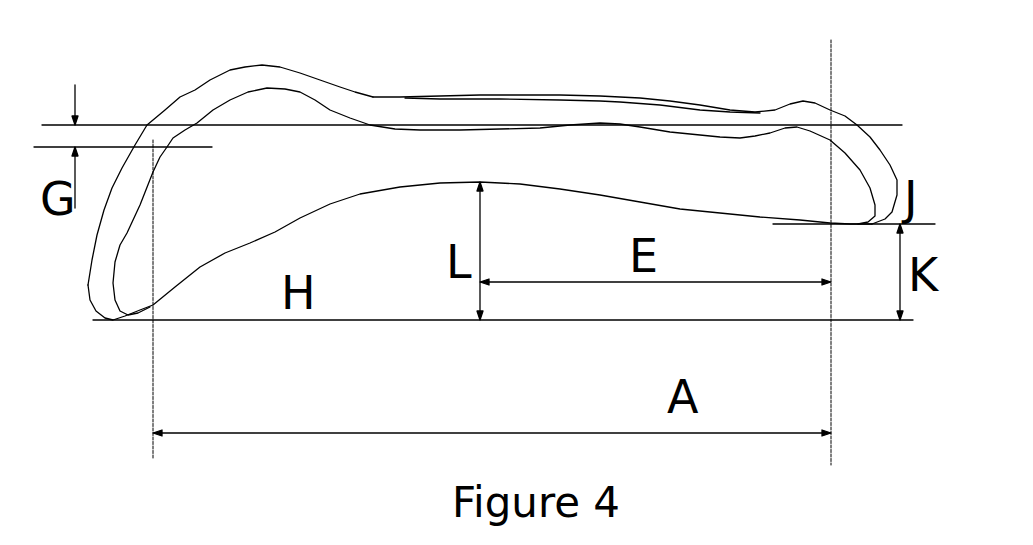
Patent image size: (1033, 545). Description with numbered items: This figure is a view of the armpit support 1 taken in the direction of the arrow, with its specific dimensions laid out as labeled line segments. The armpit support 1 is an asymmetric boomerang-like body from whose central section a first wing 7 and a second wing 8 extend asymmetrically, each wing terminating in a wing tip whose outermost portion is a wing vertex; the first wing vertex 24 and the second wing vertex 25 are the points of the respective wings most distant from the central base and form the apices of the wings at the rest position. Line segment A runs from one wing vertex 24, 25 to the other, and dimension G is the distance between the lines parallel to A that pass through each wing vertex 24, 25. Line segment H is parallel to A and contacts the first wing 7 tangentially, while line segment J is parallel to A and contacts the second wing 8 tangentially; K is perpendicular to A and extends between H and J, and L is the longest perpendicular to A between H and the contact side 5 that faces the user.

The armpit support 1 is at (498, 220).
The contact side 5 is at (287, 180).
The first wing 7 is at (247, 54).
The second wing 8 is at (717, 92).
The first wing vertex 24 is at (149, 139).
The second wing vertex 25 is at (836, 119).